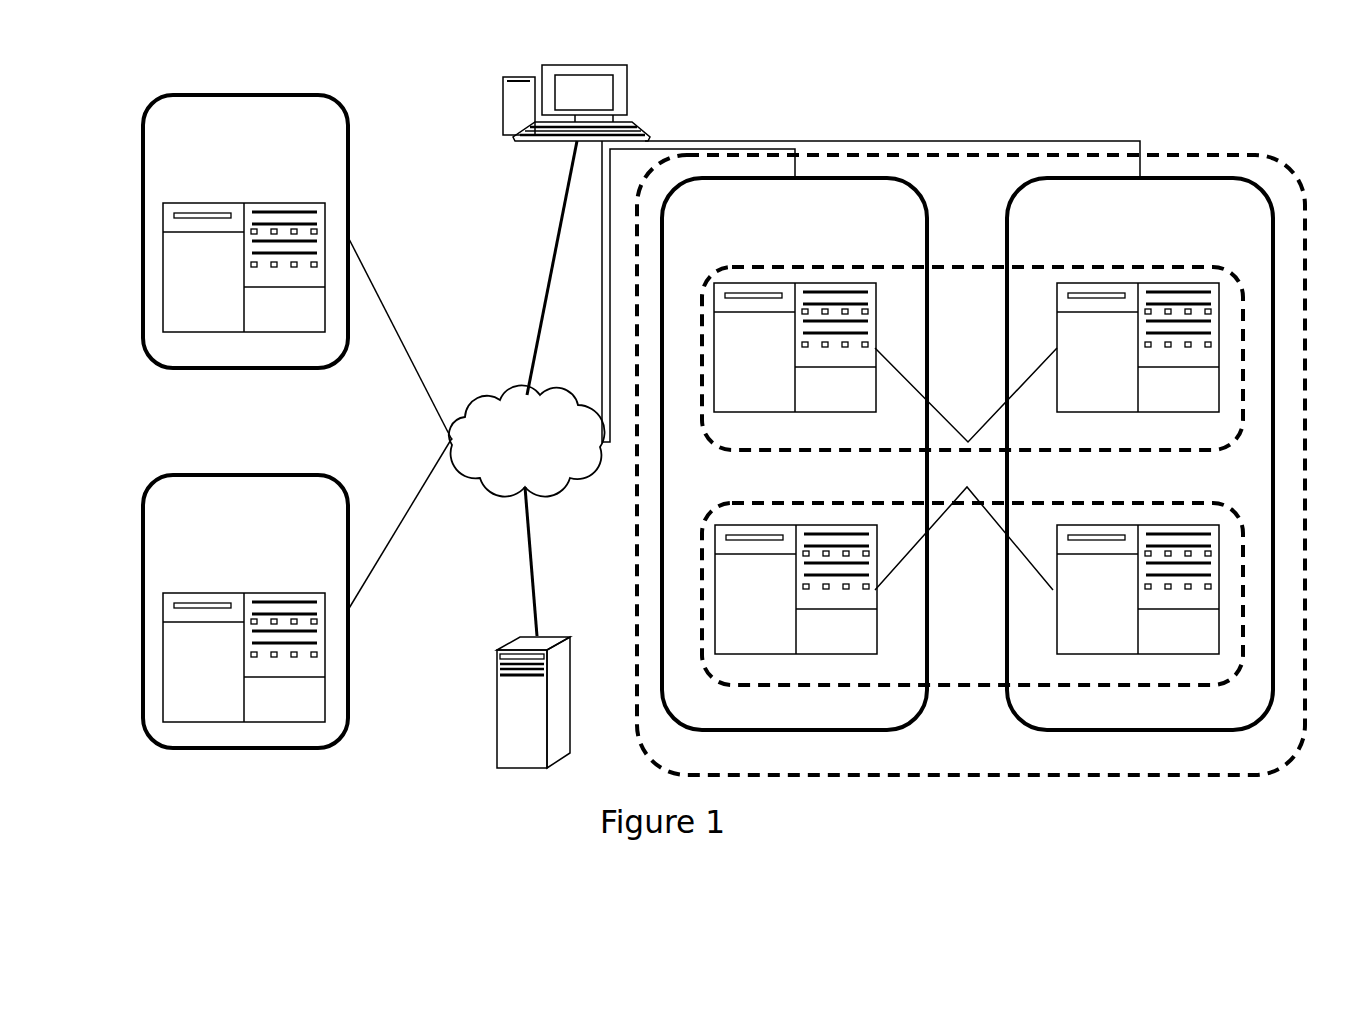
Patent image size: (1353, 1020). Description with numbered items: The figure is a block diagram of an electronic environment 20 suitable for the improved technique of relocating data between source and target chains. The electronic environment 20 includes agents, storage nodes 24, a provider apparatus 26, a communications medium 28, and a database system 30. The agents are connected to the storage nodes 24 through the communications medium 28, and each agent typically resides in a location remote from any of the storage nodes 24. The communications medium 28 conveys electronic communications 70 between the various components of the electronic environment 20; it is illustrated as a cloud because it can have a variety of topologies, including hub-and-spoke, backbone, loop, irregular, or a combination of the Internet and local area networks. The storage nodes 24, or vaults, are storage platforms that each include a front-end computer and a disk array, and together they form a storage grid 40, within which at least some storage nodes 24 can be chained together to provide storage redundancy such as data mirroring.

The electronic environment 20 is at (415, 128).
The storage nodes 24 is at (972, 476).
The provider apparatus 26 is at (503, 103).
The communications medium 28 is at (495, 323).
The database system 30 is at (495, 705).
The storage grid 40 is at (967, 775).
The electronic communications 70 is at (527, 440).